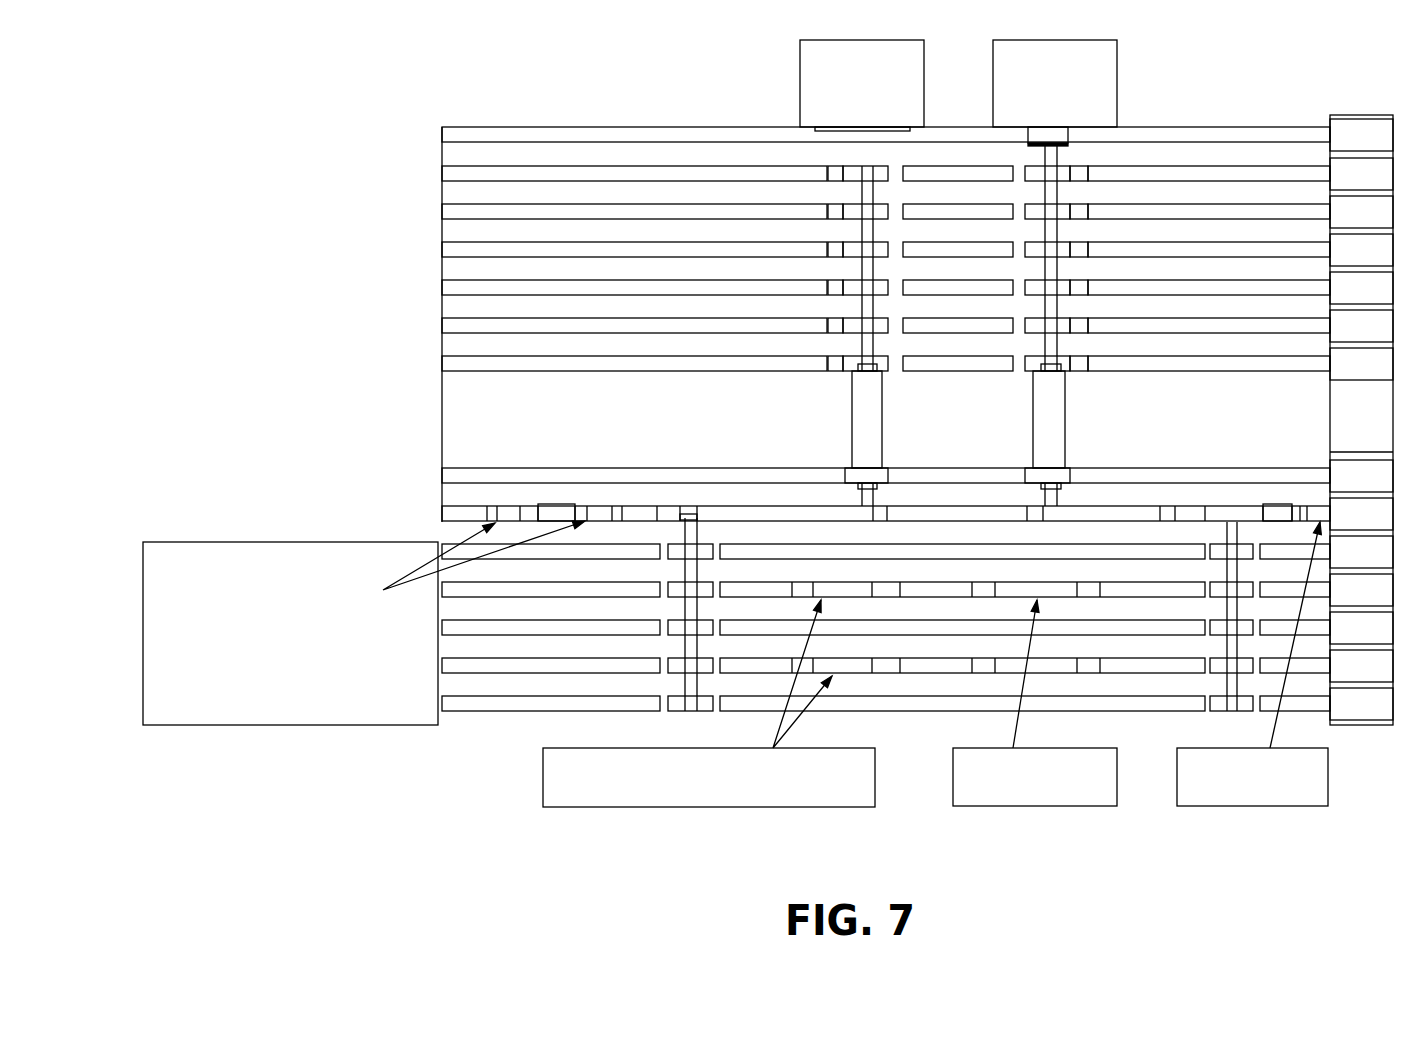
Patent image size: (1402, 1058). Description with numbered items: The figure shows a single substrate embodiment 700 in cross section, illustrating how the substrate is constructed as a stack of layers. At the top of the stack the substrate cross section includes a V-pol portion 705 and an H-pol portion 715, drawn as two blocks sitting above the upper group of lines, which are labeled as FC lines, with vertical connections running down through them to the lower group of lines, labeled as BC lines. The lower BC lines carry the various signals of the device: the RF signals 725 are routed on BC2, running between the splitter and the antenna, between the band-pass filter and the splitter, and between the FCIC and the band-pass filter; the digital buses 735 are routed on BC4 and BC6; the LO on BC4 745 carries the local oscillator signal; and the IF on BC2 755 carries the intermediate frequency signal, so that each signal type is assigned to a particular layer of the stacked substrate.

The single substrate embodiment 700 is at (219, 60).
The V-pol portion 705 is at (800, 92).
The H-pol portion 715 is at (1118, 90).
The RF signals 725 is at (343, 547).
The digital buses 735 is at (662, 807).
The LO on BC4 745 is at (1010, 792).
The IF on BC2 755 is at (1255, 792).